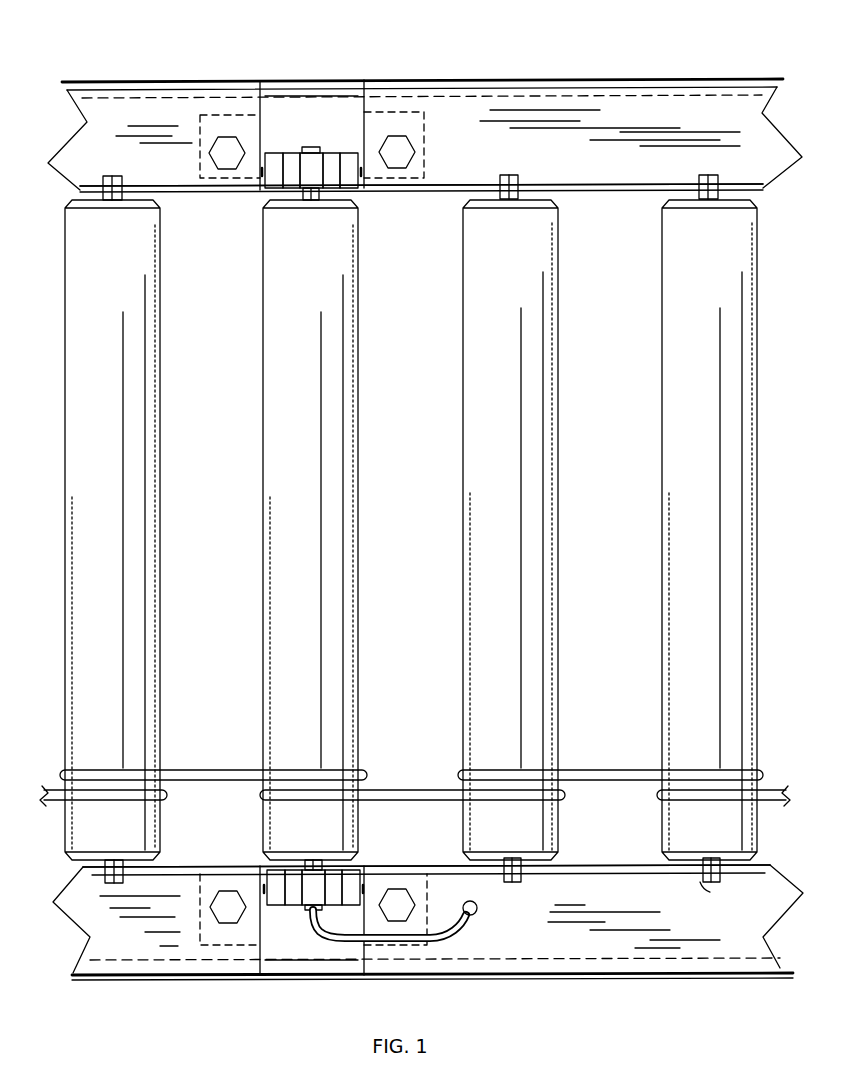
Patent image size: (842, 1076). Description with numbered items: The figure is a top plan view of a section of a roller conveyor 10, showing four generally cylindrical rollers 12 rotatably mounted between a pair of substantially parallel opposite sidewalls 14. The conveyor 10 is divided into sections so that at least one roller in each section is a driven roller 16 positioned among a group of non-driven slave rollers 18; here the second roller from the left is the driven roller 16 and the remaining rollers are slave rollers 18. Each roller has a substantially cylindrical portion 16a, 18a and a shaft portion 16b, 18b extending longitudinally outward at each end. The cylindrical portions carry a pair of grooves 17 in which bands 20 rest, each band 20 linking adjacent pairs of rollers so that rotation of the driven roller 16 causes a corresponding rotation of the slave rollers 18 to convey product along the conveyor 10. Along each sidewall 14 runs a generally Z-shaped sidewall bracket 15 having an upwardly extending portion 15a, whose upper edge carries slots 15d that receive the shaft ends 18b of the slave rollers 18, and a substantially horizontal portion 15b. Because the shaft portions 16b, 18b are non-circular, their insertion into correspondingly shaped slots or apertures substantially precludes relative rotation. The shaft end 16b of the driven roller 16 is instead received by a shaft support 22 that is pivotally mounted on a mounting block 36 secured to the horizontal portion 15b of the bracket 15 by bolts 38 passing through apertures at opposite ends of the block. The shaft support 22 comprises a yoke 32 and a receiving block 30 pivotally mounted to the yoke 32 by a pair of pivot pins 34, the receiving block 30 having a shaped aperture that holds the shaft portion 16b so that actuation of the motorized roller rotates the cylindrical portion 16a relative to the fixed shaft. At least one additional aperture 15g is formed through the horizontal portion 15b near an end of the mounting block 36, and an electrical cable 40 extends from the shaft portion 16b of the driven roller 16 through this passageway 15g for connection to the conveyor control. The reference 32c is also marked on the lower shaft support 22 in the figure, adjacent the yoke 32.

The roller conveyor 10 is at (85, 34).
The rollers 12 is at (92, 287).
The sidewalls 14 is at (747, 90).
The sidewall bracket 15 is at (770, 140).
The upwardly extending portion 15a is at (750, 180).
The horizontal portion 15b is at (640, 110).
The slots 15d is at (503, 177).
The aperture 15g is at (483, 910).
The driven roller 16 is at (345, 402).
The cylindrical portion 16a is at (340, 487).
The shaft portion 16b is at (312, 147).
The grooves 17 is at (340, 770).
The slave rollers 18 is at (77, 415).
The cylindrical portion 18a is at (138, 493).
The shaft portion 18b is at (102, 178).
The bands 20 is at (190, 770).
The shaft support 22 is at (279, 128).
The receiving block 30 is at (316, 158).
The yoke 32 is at (355, 158).
The clamp block 32c is at (355, 878).
The pivot pins 34 is at (266, 174).
The mounting block 36 is at (350, 125).
The bolt 38 is at (227, 160).
The electrical cable 40 is at (455, 925).